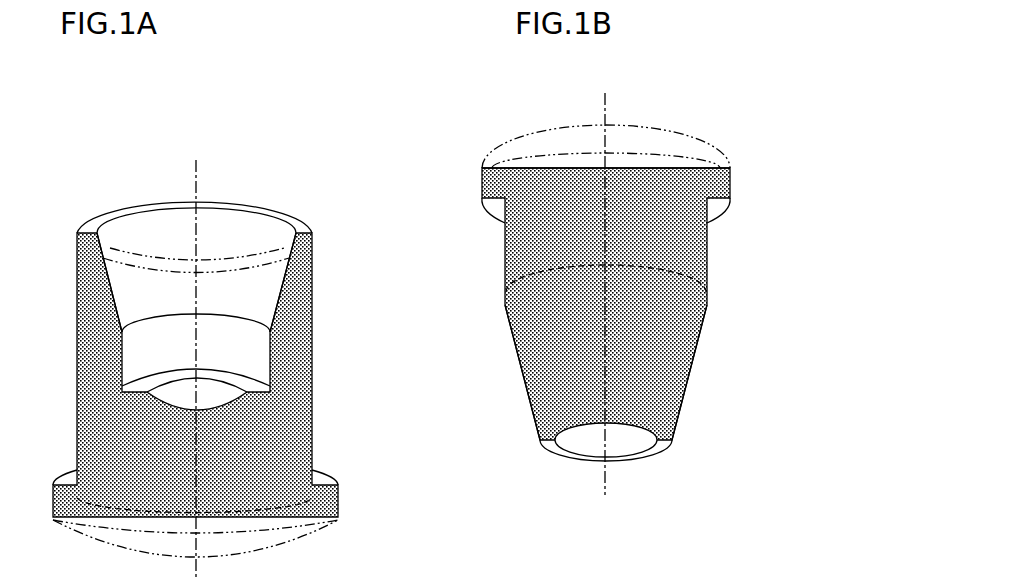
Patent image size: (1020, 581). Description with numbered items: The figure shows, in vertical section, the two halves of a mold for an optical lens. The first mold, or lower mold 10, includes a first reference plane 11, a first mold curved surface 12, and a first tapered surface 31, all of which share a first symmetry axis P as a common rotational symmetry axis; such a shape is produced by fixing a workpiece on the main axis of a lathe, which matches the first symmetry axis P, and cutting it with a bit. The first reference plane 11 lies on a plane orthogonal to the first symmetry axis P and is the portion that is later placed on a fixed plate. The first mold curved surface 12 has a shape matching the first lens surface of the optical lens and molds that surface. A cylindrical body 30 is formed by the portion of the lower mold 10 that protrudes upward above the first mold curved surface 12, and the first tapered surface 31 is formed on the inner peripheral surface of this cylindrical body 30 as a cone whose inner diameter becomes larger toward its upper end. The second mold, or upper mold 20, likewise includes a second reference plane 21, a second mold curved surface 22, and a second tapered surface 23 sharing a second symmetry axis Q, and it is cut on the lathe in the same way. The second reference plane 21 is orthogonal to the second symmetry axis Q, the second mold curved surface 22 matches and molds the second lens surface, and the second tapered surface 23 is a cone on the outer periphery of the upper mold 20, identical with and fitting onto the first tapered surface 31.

In FIG. 1A, the first mold (lower mold) 10 is at (167, 63).
In FIG. 1A, the first reference plane 11 is at (280, 522).
In FIG. 1A, the first mold curved surface 12 is at (210, 408).
In FIG. 1A, the cylindrical body 30 is at (318, 237).
In FIG. 1A, the first tapered surface 31 is at (238, 260).
In FIG. 1A, the first symmetry axis P is at (198, 452).
In FIG. 1B, the second mold (upper mold) 20 is at (607, 82).
In FIG. 1B, the second reference plane 21 is at (655, 177).
In FIG. 1B, the second mold curved surface 22 is at (635, 445).
In FIG. 1B, the second tapered surface 23 is at (687, 409).
In FIG. 1B, the second symmetry axis Q is at (605, 340).